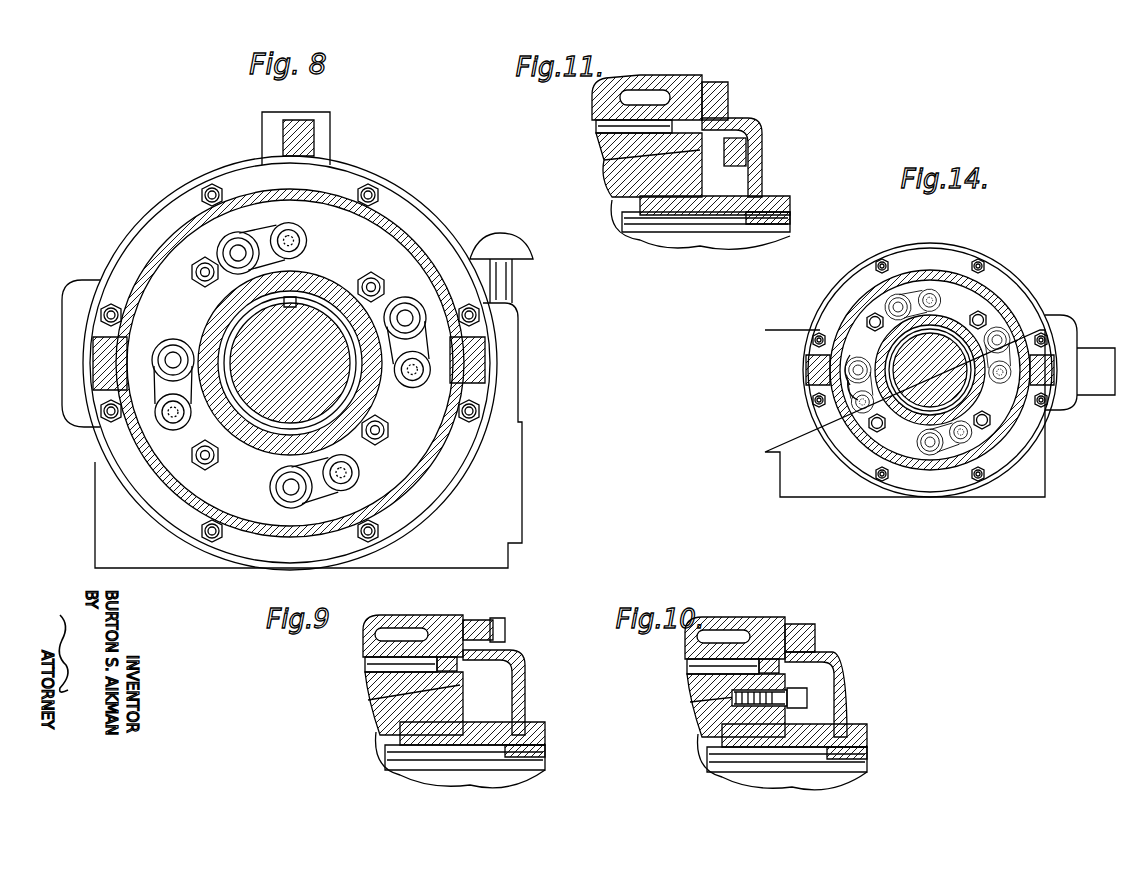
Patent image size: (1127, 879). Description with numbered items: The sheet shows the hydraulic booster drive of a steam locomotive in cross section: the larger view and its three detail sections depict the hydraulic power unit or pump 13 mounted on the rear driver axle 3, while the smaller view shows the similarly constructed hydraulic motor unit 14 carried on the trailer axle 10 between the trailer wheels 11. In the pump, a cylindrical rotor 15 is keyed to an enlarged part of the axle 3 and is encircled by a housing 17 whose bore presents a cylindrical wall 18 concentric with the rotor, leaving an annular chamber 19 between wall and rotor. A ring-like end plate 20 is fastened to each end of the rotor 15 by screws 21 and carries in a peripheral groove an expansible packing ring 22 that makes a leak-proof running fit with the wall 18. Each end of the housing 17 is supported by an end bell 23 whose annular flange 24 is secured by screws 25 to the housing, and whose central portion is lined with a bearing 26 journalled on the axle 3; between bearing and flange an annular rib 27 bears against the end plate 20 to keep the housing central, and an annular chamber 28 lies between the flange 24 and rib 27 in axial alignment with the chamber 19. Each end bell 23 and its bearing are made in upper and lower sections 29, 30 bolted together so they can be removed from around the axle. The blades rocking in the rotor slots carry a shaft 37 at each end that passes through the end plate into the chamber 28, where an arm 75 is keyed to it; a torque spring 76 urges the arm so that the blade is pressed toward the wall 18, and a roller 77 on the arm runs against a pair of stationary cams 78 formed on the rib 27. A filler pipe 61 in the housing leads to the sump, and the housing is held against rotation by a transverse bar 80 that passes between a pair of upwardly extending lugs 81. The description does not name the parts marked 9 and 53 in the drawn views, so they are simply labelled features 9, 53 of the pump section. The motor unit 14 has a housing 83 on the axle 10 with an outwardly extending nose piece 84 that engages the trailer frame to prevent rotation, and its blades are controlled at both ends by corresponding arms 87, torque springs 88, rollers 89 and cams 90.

In FIG. 8, the axle 3 is at (346, 411).
In FIG. 11, the axle 3 is at (686, 244).
In FIG. 9, the axle 3 is at (405, 775).
In FIG. 10, the axle 3 is at (778, 765).
In FIG. 8, the bearing hub 9 is at (391, 176).
In FIG. 8, the trailer axle 10 is at (451, 226).
In FIG. 14, the trailer axle 10 is at (930, 370).
In FIG. 8, the trailer wheels 11 is at (336, 382).
In FIG. 8, the hydraulic power unit or pump 13 is at (244, 177).
In FIG. 11, the hydraulic power unit or pump 13 is at (700, 80).
In FIG. 9, the hydraulic power unit or pump 13 is at (456, 620).
In FIG. 14, the hydraulic motor unit 14 is at (928, 246).
In FIG. 11, the rotor 15 is at (612, 190).
In FIG. 9, the rotor 15 is at (372, 720).
In FIG. 10, the rotor 15 is at (673, 734).
In FIG. 11, the housing 17 is at (632, 76).
In FIG. 9, the housing 17 is at (378, 616).
In FIG. 10, the housing 17 is at (735, 622).
In FIG. 11, the cylindrical wall 18 is at (596, 127).
In FIG. 9, the cylindrical wall 18 is at (365, 665).
In FIG. 10, the cylindrical wall 18 is at (704, 668).
In FIG. 11, the annular chamber 19 is at (608, 136).
In FIG. 9, the annular chamber 19 is at (372, 676).
In FIG. 10, the annular chamber 19 is at (717, 705).
In FIG. 11, the end plate 20 is at (640, 155).
In FIG. 9, the end plate 20 is at (400, 698).
In FIG. 10, the end plate 20 is at (717, 707).
In FIG. 8, the screws 21 is at (204, 288).
In FIG. 10, the screws 21 is at (783, 705).
In FIG. 11, the packing ring 22 is at (738, 106).
In FIG. 9, the packing ring 22 is at (458, 665).
In FIG. 10, the packing ring 22 is at (803, 694).
In FIG. 8, the end bell 23 is at (512, 325).
In FIG. 11, the end bell 23 is at (764, 184).
In FIG. 9, the end bell 23 is at (530, 728).
In FIG. 10, the end bell 23 is at (806, 724).
In FIG. 8, the annular flange 24 is at (445, 247).
In FIG. 11, the annular flange 24 is at (722, 84).
In FIG. 9, the annular flange 24 is at (480, 622).
In FIG. 10, the annular flange 24 is at (807, 619).
In FIG. 8, the screws 25 is at (205, 194).
In FIG. 9, the screws 25 is at (500, 626).
In FIG. 11, the bearing 26 is at (788, 218).
In FIG. 9, the bearing 26 is at (545, 752).
In FIG. 10, the bearing 26 is at (865, 756).
In FIG. 8, the annular rib 27 is at (358, 395).
In FIG. 11, the annular rib 27 is at (730, 200).
In FIG. 9, the annular rib 27 is at (494, 730).
In FIG. 10, the annular rib 27 is at (815, 768).
In FIG. 8, the annular chamber 28 is at (160, 278).
In FIG. 11, the annular chamber 28 is at (752, 130).
In FIG. 9, the annular chamber 28 is at (518, 672).
In FIG. 10, the annular chamber 28 is at (864, 672).
In FIG. 8, the upper section 29 is at (170, 244).
In FIG. 11, the upper section 29 is at (760, 156).
In FIG. 9, the upper section 29 is at (524, 695).
In FIG. 10, the upper section 29 is at (867, 692).
In FIG. 8, the lower section 30 is at (500, 380).
In FIG. 8, the shaft 37 is at (302, 250).
In FIG. 11, the slot 53 is at (655, 92).
In FIG. 9, the slot 53 is at (405, 630).
In FIG. 10, the slot 53 is at (731, 614).
In FIG. 8, the filler pipe 61 is at (513, 278).
In FIG. 8, the arm 75 is at (272, 238).
In FIG. 8, the torque spring 76 is at (300, 245).
In FIG. 8, the roller 77 is at (430, 292).
In FIG. 8, the stationary cams 78 is at (406, 300).
In FIG. 8, the bar 80 is at (322, 128).
In FIG. 8, the lugs 81 is at (312, 141).
In FIG. 14, the housing 83 is at (838, 298).
In FIG. 14, the nose piece 84 is at (1100, 396).
In FIG. 14, the arms 87 is at (850, 385).
In FIG. 14, the torque springs 88 is at (928, 371).
In FIG. 14, the rollers 89 is at (852, 395).
In FIG. 14, the cams 90 is at (930, 370).